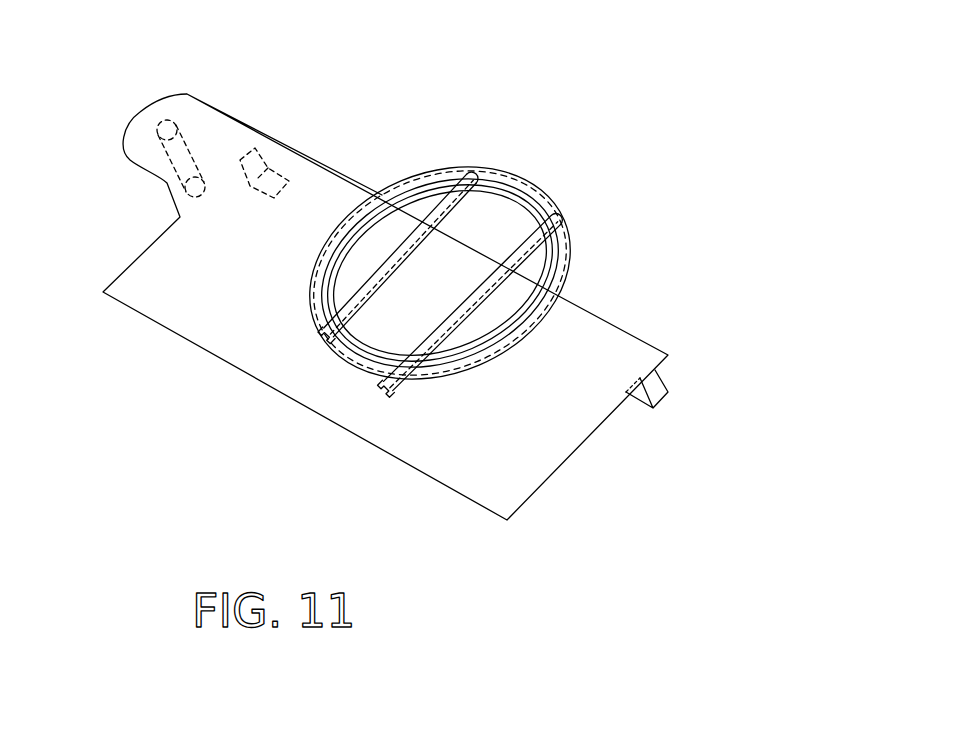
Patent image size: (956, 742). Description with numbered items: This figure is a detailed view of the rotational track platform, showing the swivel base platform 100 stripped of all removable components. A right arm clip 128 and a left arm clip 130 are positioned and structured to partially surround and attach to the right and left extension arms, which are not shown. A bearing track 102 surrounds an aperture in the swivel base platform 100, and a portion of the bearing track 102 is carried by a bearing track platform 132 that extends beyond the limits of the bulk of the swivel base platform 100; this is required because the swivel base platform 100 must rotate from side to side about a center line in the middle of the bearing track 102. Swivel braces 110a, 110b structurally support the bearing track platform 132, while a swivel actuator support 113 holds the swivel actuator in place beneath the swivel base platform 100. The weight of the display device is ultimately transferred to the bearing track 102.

The swivel base platform 100 is at (504, 452).
The bearing track 102 is at (552, 260).
The swivel brace 110a is at (391, 253).
The swivel brace 110b is at (485, 275).
The swivel actuator support 113 is at (183, 148).
The right arm clip 128 is at (660, 393).
The left arm clip 130 is at (272, 179).
The bearing track platform 132 is at (540, 205).